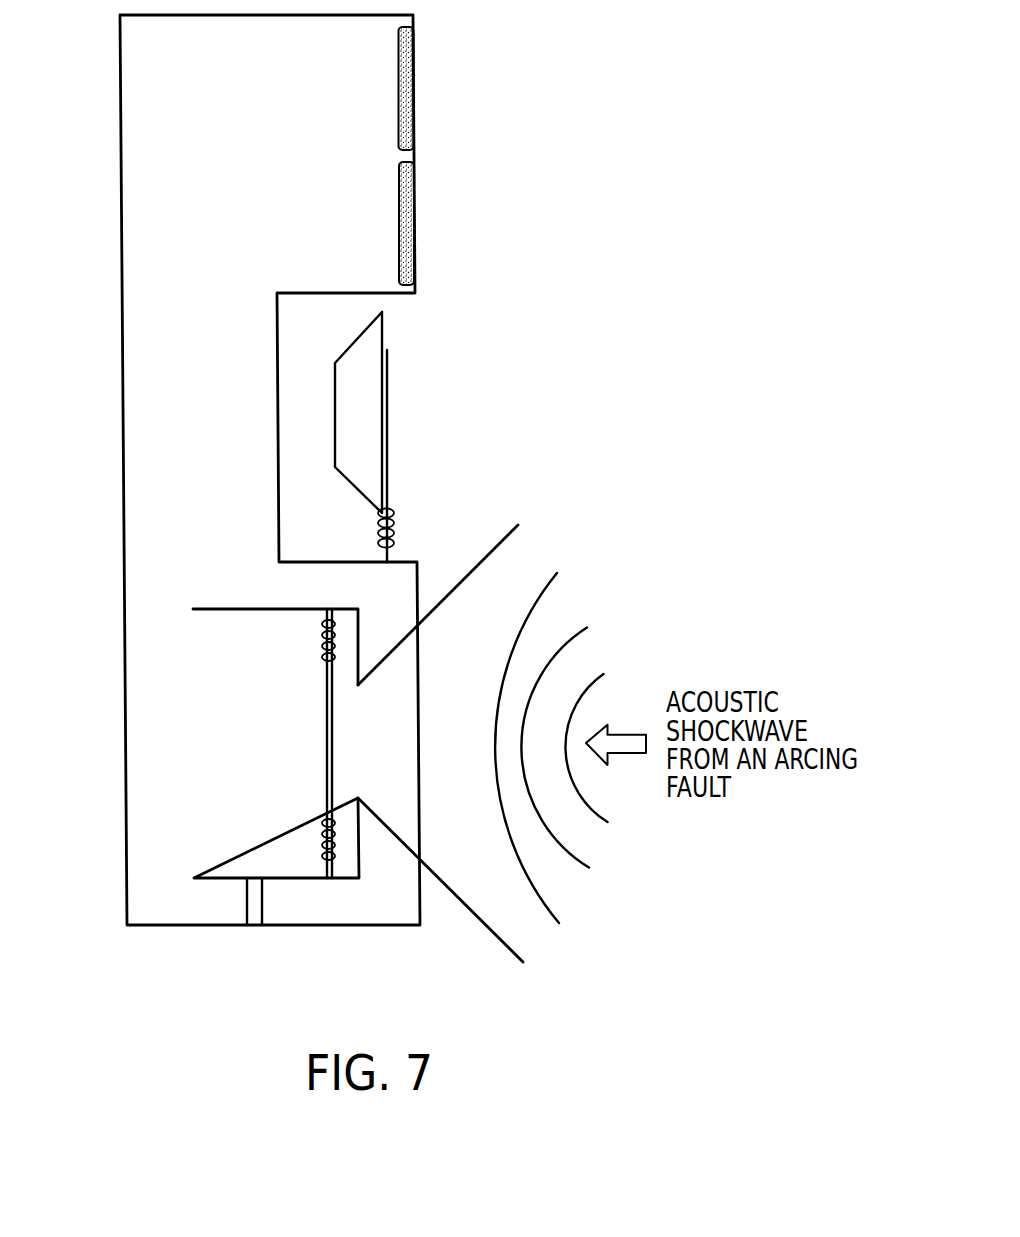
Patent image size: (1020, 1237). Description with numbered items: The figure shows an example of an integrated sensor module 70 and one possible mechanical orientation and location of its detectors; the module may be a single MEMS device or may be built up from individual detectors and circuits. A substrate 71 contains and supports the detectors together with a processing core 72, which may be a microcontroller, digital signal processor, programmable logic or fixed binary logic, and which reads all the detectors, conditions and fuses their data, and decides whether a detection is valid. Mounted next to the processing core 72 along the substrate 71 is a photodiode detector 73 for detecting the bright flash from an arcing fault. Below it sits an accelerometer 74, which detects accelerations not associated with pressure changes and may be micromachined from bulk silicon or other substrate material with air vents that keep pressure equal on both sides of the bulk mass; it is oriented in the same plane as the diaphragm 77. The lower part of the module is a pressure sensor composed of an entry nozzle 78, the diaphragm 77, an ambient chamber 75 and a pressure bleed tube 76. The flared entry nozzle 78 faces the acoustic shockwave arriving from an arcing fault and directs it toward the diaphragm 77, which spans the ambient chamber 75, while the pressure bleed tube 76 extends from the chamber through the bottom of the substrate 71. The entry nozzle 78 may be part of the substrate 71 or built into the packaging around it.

The integrated sensor module 70 is at (289, 538).
The substrate 71 is at (163, 162).
The processing core 72 is at (415, 85).
The photodiode detector 73 is at (415, 225).
The accelerometer 74 is at (360, 422).
The ambient chamber 75 is at (228, 703).
The pressure bleed tube 76 is at (257, 927).
The diaphragm 77 is at (333, 862).
The entry nozzle 78 is at (490, 928).